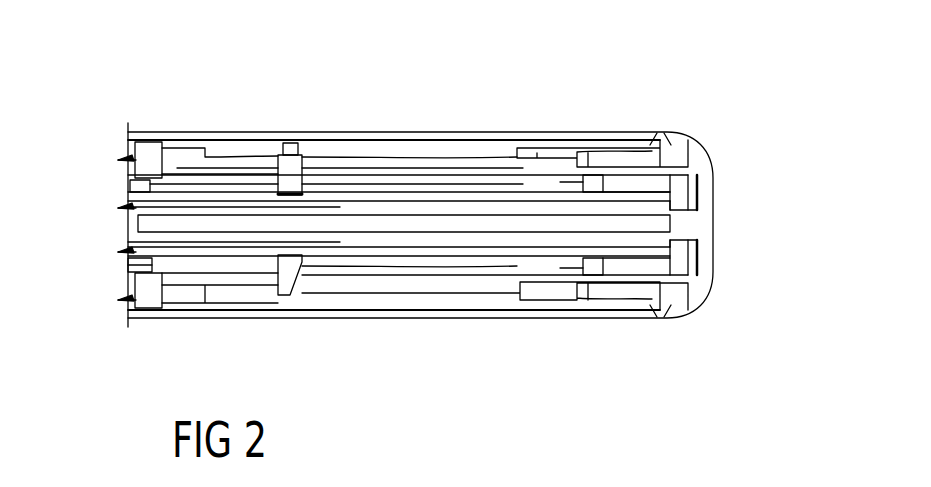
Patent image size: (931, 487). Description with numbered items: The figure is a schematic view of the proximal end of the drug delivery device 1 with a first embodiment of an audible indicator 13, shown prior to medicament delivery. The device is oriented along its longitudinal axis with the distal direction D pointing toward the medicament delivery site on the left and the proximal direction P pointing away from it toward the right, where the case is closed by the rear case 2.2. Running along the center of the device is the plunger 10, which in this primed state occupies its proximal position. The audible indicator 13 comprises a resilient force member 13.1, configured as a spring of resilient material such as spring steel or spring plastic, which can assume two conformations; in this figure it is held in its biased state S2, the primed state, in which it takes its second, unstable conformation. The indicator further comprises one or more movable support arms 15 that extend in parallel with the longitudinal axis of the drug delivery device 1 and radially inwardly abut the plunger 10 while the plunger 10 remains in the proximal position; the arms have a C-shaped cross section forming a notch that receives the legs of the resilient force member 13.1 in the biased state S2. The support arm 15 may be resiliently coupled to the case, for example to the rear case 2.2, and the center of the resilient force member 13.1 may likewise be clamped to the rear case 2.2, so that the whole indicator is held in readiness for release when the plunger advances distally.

The drug delivery device 1 is at (668, 93).
The audible indicator 13 is at (258, 128).
The resilient force member 13.1 is at (287, 140).
The movable support arm 15 is at (400, 188).
The plunger 10 is at (513, 243).
The rear case 2.2 is at (717, 208).
The biased state S2 is at (302, 108).
The distal direction D is at (57, 230).
The proximal direction P is at (789, 230).